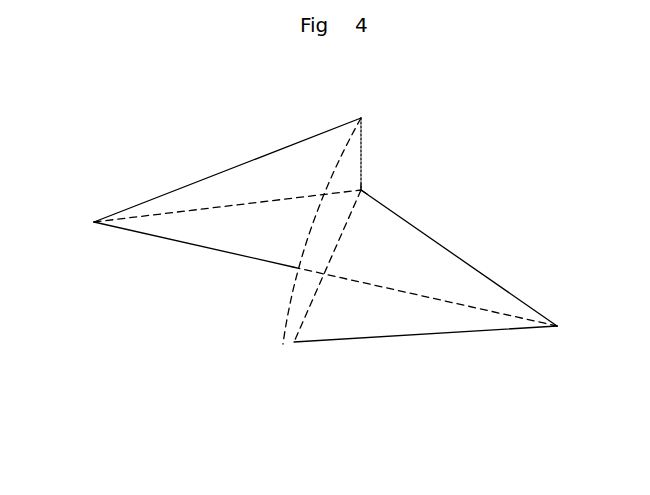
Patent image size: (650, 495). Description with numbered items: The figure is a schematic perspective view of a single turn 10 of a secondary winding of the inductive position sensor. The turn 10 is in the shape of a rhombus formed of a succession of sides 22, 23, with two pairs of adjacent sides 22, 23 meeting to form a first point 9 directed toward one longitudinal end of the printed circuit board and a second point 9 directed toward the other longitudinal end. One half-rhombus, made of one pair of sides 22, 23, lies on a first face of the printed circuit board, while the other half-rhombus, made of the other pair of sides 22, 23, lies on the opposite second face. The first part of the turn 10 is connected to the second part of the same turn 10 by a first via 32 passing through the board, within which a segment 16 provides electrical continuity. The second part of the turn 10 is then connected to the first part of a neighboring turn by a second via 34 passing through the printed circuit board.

The turn 10 is at (377, 338).
The side 22 is at (238, 160).
The side 23 is at (192, 245).
The point 9 is at (94, 222).
The via 32 is at (362, 138).
The segment 16 is at (362, 172).
The second via 34 is at (287, 316).